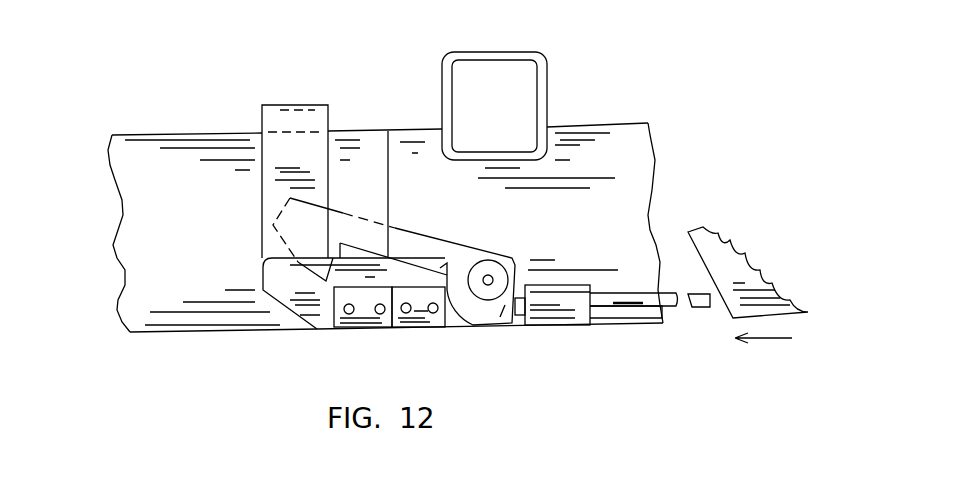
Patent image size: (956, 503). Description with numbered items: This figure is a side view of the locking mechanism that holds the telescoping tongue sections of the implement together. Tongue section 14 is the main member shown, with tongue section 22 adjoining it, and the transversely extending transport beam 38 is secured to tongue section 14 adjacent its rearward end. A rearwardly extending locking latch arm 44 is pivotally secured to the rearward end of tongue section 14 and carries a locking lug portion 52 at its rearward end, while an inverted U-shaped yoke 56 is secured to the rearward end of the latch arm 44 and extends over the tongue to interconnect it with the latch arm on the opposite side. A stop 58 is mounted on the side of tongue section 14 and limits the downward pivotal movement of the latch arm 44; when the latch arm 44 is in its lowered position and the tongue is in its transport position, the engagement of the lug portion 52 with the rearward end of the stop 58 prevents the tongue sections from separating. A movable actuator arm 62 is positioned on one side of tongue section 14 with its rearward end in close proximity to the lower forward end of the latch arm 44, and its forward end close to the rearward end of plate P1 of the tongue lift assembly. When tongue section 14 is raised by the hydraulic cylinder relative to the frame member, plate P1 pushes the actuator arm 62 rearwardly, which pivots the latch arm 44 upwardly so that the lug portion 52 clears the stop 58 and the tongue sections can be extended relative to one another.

The tongue section 22 is at (187, 228).
The tongue section 14 is at (592, 222).
The inverted U-shaped yoke 56 is at (287, 103).
The transport beam 38 is at (543, 57).
The locking lug portion 52 is at (317, 293).
The stop 58 is at (360, 320).
The locking latch arm 44 is at (438, 267).
The movable actuator arm 62 is at (637, 300).
The plate P1 is at (737, 307).